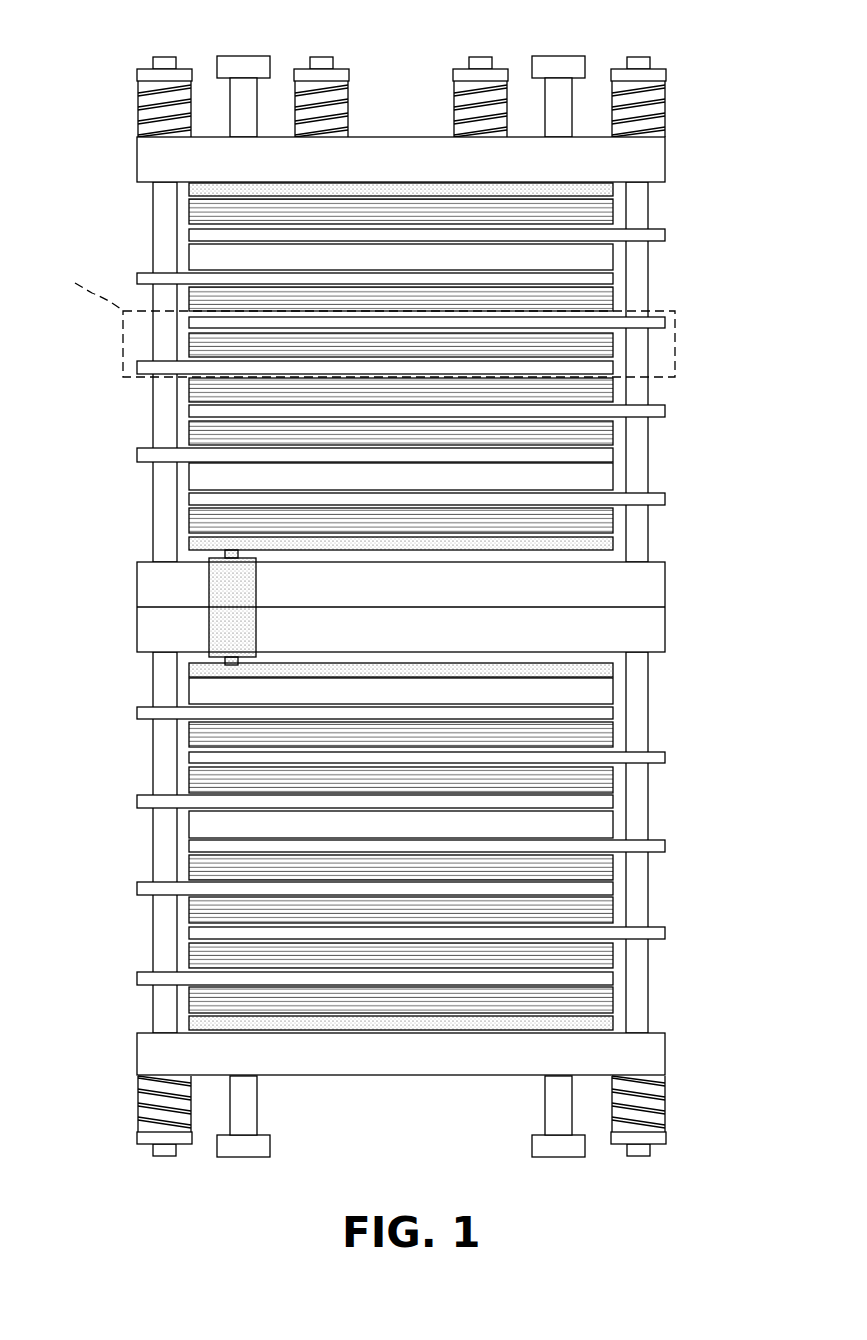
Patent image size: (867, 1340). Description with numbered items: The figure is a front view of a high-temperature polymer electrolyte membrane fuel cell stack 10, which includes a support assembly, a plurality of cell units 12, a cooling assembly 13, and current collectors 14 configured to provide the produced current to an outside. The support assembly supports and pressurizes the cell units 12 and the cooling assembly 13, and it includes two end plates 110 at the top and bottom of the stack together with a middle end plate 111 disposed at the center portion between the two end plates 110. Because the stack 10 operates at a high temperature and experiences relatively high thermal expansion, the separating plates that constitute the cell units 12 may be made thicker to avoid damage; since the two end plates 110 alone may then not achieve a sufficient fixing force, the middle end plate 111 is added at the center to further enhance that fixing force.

The high-temperature polymer electrolyte membrane fuel cell stack 10 is at (415, 26).
The end plate 110 is at (658, 155).
The middle end plate 111 is at (660, 628).
The cell unit 12 is at (613, 345).
The cooling assembly 13 is at (665, 318).
The current collector 14 is at (613, 189).